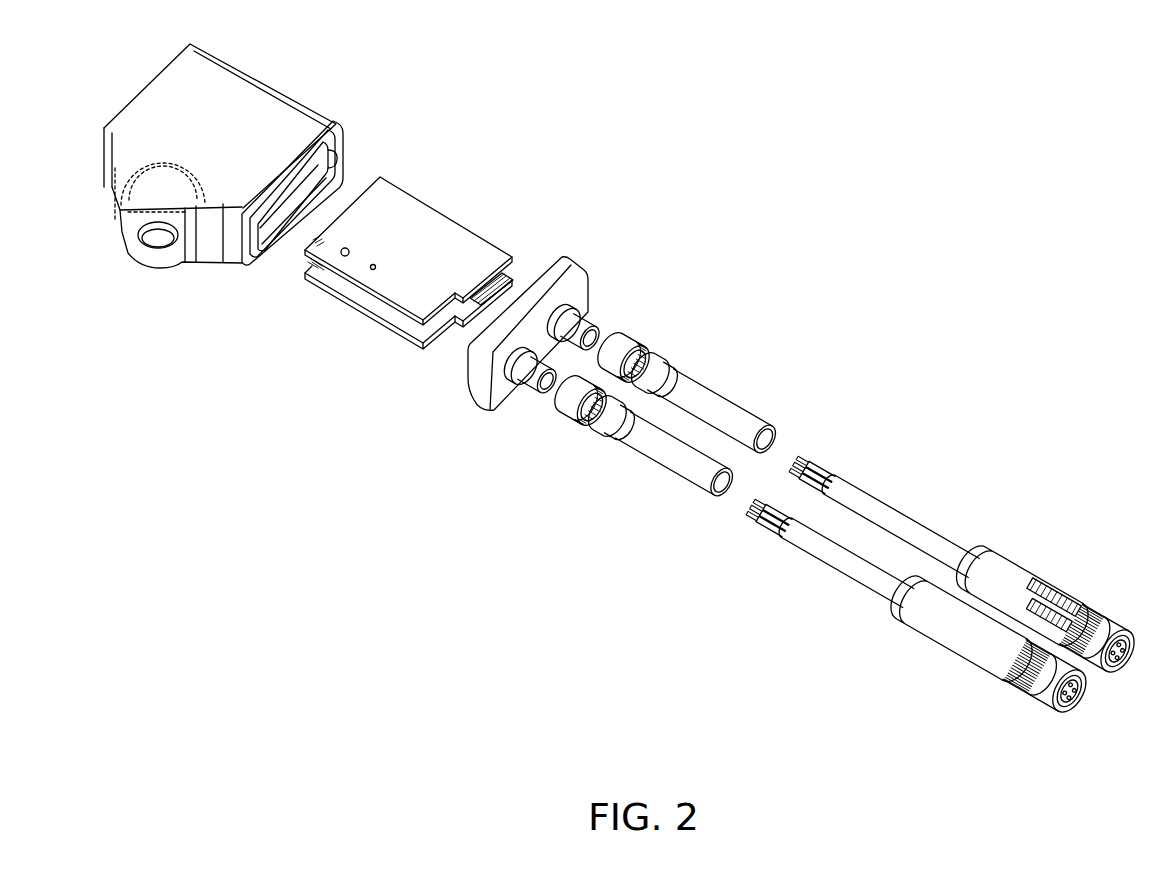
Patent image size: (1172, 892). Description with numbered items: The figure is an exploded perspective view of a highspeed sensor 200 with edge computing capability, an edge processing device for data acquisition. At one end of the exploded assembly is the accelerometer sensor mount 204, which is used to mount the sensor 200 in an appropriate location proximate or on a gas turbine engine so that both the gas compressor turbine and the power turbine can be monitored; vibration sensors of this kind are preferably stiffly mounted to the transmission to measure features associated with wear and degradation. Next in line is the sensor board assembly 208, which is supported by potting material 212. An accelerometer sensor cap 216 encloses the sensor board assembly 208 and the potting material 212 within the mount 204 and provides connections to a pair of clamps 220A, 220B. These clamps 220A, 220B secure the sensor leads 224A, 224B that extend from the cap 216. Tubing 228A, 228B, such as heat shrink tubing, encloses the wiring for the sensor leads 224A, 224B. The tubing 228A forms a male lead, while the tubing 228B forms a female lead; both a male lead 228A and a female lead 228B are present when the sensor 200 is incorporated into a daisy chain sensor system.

The highspeed sensor 200 is at (687, 157).
The accelerometer sensor mount 204 is at (215, 268).
The sensor board assembly 208 is at (460, 217).
The potting material 212 is at (373, 317).
The accelerometer sensor cap 216 is at (475, 404).
The clamp 220A is at (622, 347).
The clamp 220B is at (567, 405).
The sensor lead 224A is at (703, 395).
The sensor lead 224B is at (668, 457).
The tubing (male lead) 228A is at (827, 558).
The tubing (female lead) 228B is at (883, 507).